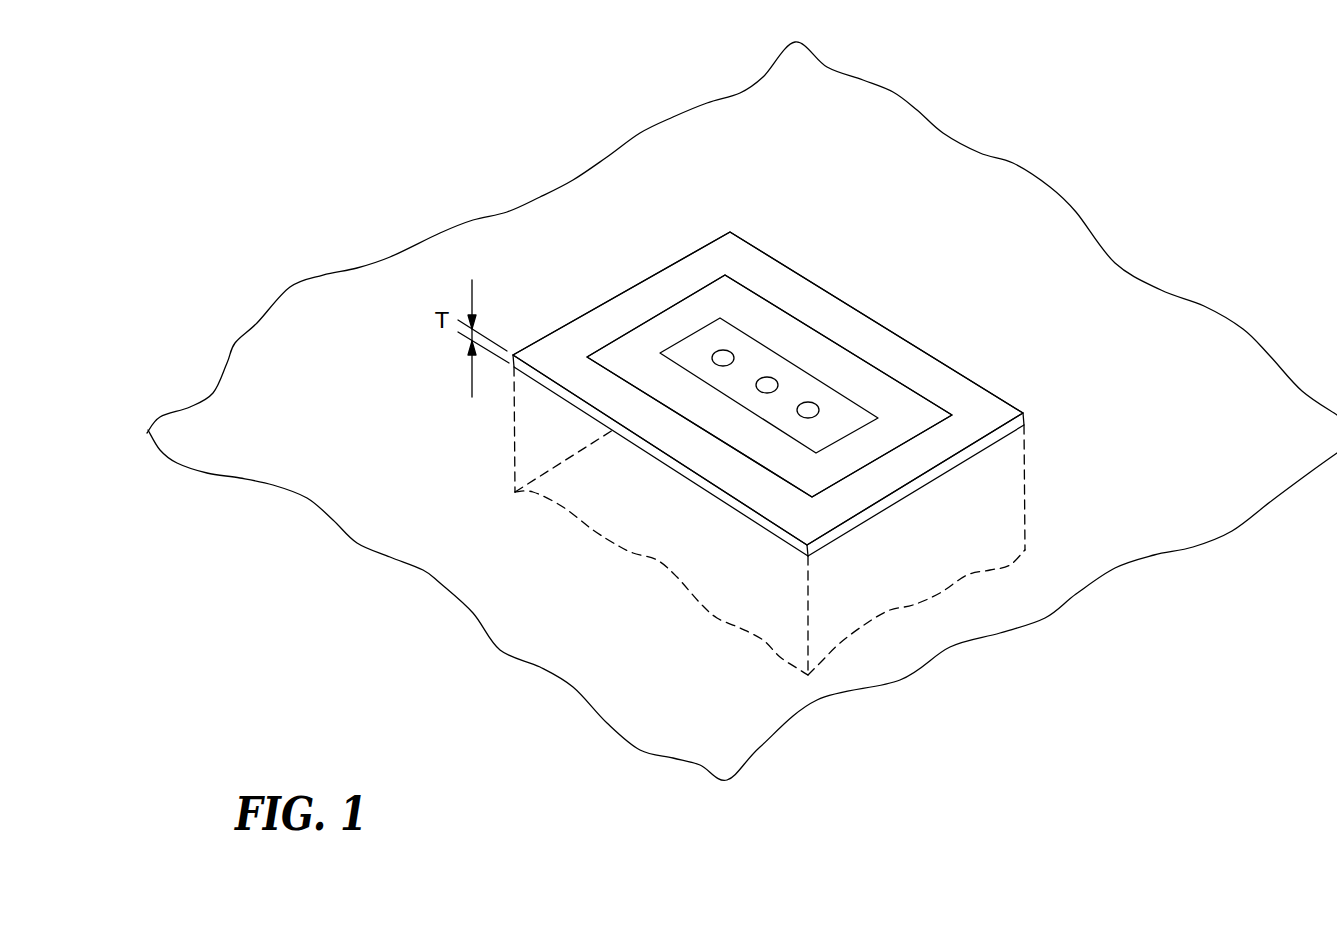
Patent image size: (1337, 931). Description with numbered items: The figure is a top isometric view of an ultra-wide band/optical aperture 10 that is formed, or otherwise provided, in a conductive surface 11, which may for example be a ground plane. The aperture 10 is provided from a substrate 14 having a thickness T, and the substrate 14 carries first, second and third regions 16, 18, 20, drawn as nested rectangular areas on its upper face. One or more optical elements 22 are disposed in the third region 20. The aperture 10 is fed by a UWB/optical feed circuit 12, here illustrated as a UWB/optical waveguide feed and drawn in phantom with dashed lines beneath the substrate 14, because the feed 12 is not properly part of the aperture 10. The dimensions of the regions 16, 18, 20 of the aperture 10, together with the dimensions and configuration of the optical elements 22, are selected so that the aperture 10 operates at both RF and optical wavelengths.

The ultra-wide band/optical aperture 10 is at (654, 252).
The conductive surface 11 is at (322, 418).
The UWB/optical feed circuit 12 is at (1030, 520).
The substrate 14 is at (1025, 413).
The first region 16 is at (745, 240).
The second region 18 is at (755, 290).
The third region 20 is at (747, 335).
The optical elements 22 is at (732, 356).